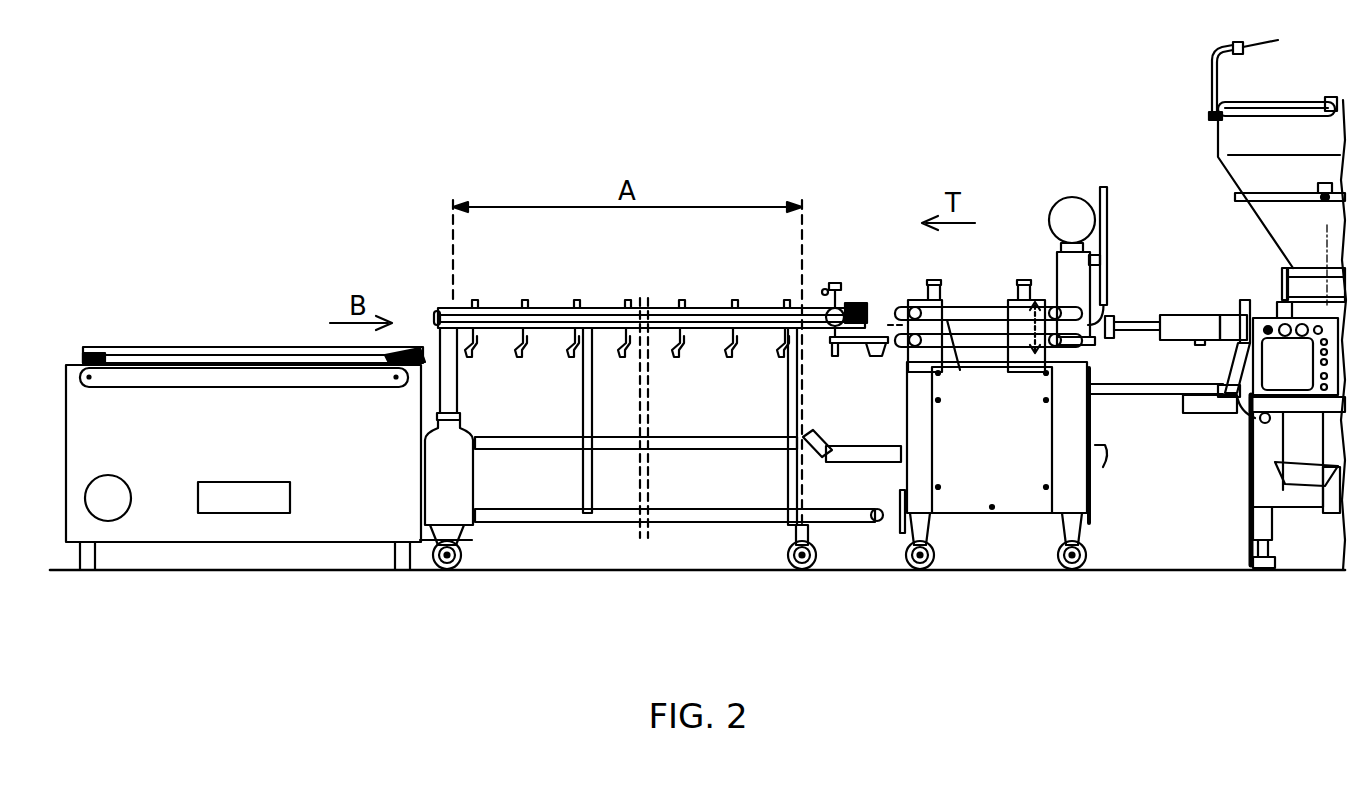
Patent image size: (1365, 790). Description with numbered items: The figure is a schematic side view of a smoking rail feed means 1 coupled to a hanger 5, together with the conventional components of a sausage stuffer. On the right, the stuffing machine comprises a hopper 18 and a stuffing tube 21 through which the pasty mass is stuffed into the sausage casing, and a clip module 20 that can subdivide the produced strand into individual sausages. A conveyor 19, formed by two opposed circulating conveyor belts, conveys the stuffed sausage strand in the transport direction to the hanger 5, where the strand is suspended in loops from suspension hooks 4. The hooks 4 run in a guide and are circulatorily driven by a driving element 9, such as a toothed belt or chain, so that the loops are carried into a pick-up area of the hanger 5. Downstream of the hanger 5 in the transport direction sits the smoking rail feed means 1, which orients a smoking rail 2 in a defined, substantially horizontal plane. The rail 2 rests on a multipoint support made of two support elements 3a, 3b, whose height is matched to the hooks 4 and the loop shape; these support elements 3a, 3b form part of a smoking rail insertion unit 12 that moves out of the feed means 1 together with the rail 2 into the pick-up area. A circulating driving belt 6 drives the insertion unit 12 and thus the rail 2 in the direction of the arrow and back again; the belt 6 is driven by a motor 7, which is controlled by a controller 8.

The smoking rail feed means 1 is at (205, 292).
The smoking rail 2 is at (283, 346).
The support element 3a is at (399, 348).
The support element 3b is at (86, 355).
The suspension hooks 4 is at (679, 357).
The hanger 5 is at (731, 292).
The circulating driving belt 6 is at (335, 388).
The motor 7 is at (130, 484).
The controller 8 is at (291, 498).
The driving element 9 is at (492, 307).
The smoking rail insertion unit 12 is at (158, 366).
The hopper 18 is at (1206, 162).
The conveyor 19 is at (966, 307).
The clip module 20 is at (1071, 197).
The stuffing tube 21 is at (1145, 305).